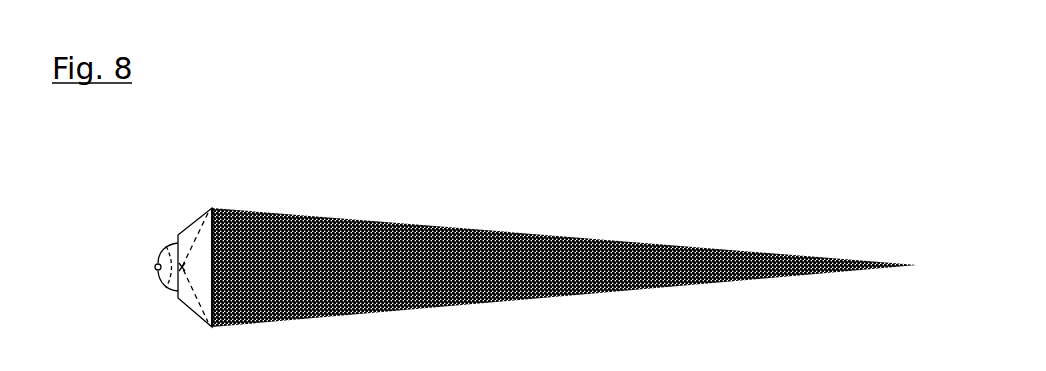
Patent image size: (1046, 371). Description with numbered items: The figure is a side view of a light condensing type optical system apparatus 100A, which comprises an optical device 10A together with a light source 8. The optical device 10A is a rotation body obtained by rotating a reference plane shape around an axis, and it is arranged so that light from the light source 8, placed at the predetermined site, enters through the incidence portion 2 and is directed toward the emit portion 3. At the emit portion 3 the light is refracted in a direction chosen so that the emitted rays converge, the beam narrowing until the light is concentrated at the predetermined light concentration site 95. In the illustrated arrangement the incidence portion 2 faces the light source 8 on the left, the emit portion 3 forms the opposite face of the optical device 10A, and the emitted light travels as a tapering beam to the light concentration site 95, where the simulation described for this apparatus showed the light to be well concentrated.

The optical system apparatus 100A is at (203, 127).
The optical device 10A is at (183, 212).
The incidence portion 2 is at (153, 275).
The light source 8 is at (157, 265).
The emit portion 3 is at (225, 208).
The light concentration site 95 is at (918, 266).